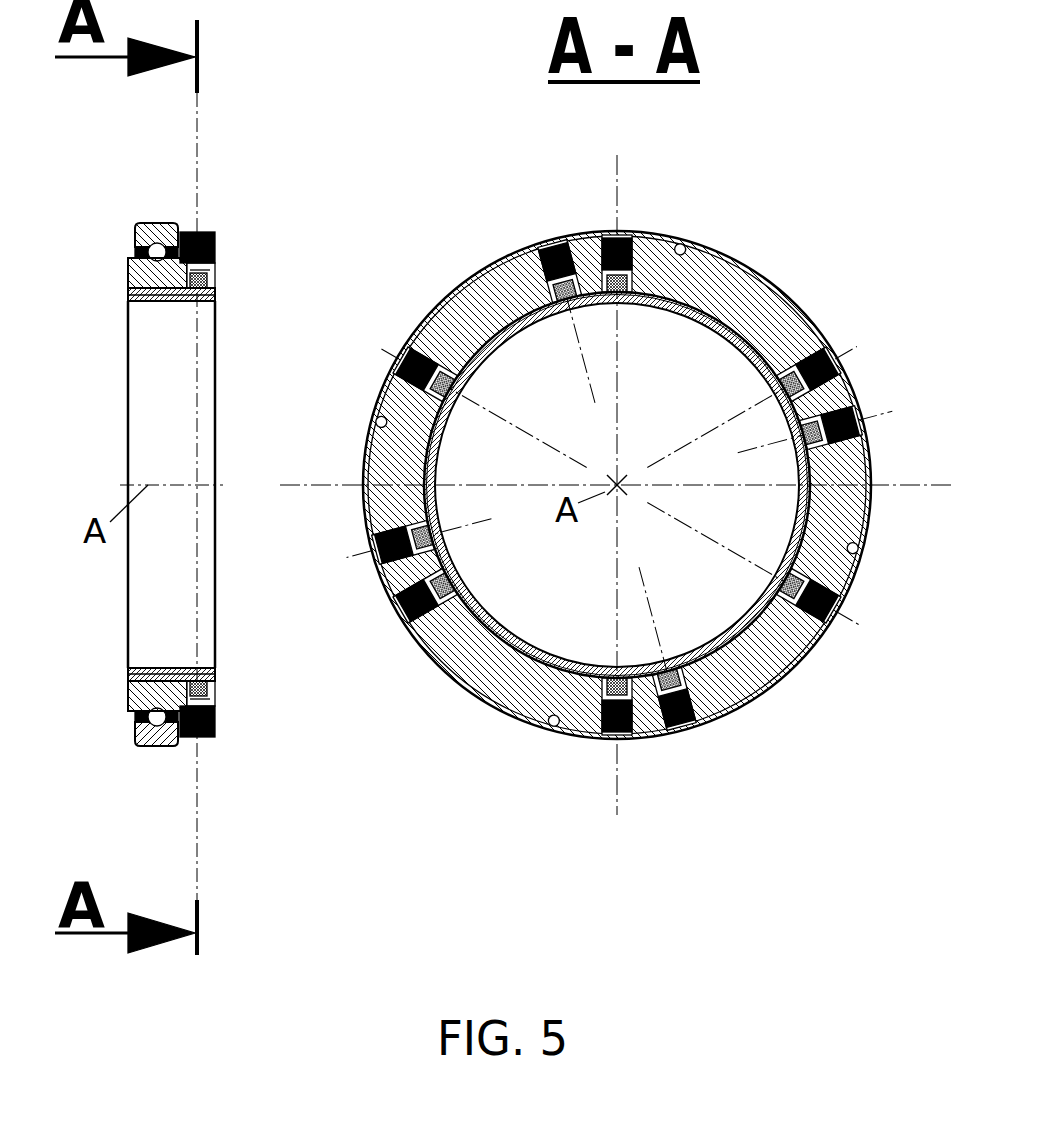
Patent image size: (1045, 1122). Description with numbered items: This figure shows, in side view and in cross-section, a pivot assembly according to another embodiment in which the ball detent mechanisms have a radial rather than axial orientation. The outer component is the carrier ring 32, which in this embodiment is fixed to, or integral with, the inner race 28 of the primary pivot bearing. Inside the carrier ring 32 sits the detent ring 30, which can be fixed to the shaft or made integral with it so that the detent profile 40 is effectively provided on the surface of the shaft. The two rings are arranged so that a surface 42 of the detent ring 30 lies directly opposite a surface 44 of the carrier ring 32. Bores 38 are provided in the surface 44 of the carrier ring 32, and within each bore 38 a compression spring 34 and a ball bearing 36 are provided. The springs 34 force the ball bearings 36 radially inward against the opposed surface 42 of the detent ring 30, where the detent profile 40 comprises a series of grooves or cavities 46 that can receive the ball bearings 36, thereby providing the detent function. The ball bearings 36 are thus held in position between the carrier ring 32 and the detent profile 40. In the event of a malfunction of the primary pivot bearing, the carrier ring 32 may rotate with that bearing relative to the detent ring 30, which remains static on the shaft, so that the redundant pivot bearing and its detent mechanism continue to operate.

The inner race 28 is at (143, 275).
The detent ring 30 is at (727, 318).
The carrier ring 32 is at (657, 260).
The compression spring 34 is at (367, 580).
The ball bearing 36 is at (430, 537).
The bore 38 is at (805, 610).
The detent profile 40 is at (609, 542).
The surface of the detent ring 42 is at (503, 647).
The surface of the carrier ring 44 is at (538, 310).
The grooves or cavities 46 is at (468, 357).